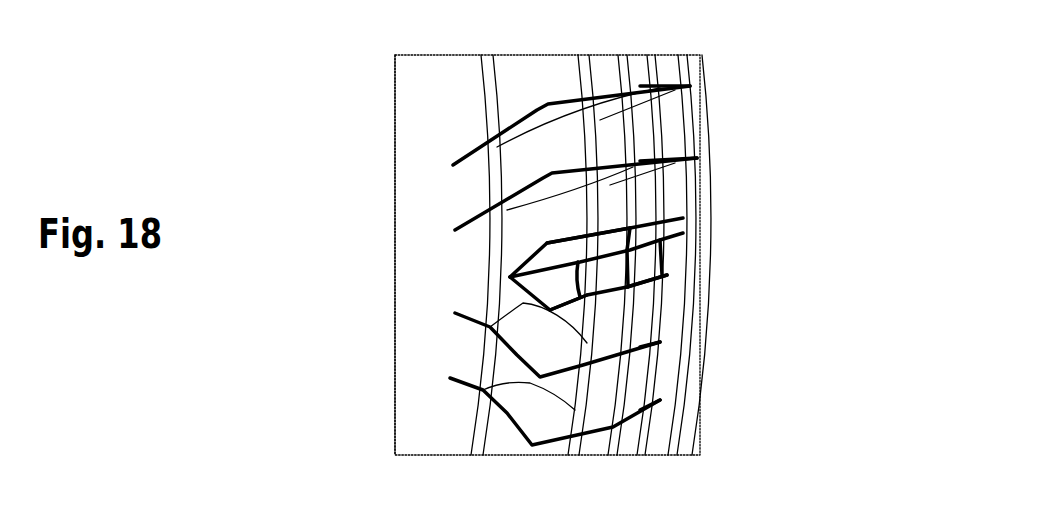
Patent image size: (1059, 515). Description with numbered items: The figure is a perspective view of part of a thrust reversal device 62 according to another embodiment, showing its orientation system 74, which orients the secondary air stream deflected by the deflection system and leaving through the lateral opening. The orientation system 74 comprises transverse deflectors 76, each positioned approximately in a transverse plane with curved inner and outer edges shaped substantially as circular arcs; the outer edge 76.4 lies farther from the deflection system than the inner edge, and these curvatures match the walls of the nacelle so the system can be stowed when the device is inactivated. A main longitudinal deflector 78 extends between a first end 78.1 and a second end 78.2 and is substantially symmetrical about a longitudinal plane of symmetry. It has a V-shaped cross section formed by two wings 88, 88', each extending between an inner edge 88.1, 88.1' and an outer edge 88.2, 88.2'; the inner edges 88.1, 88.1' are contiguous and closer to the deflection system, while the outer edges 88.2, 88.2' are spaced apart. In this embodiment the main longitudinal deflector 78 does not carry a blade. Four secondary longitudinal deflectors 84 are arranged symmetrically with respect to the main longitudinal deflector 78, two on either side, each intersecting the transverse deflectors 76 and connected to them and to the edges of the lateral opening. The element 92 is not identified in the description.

The thrust reversal device 62 is at (312, 293).
The orientation system 74 is at (470, 447).
The transverse deflector 76 is at (535, 459).
The outer edge 76.4 is at (653, 63).
The main longitudinal deflector 78 is at (704, 225).
The first end 78.1 is at (510, 277).
The second end 78.2 is at (690, 238).
The secondary longitudinal deflector 84 is at (692, 160).
The wing 88 is at (516, 238).
The wing 88' is at (465, 311).
The inner edge 88.1 is at (460, 234).
The inner edge 88.1' is at (486, 255).
The outer edge 88.2 is at (676, 234).
The outer edge 88.2' is at (705, 292).
The blade 92 is at (520, 130).